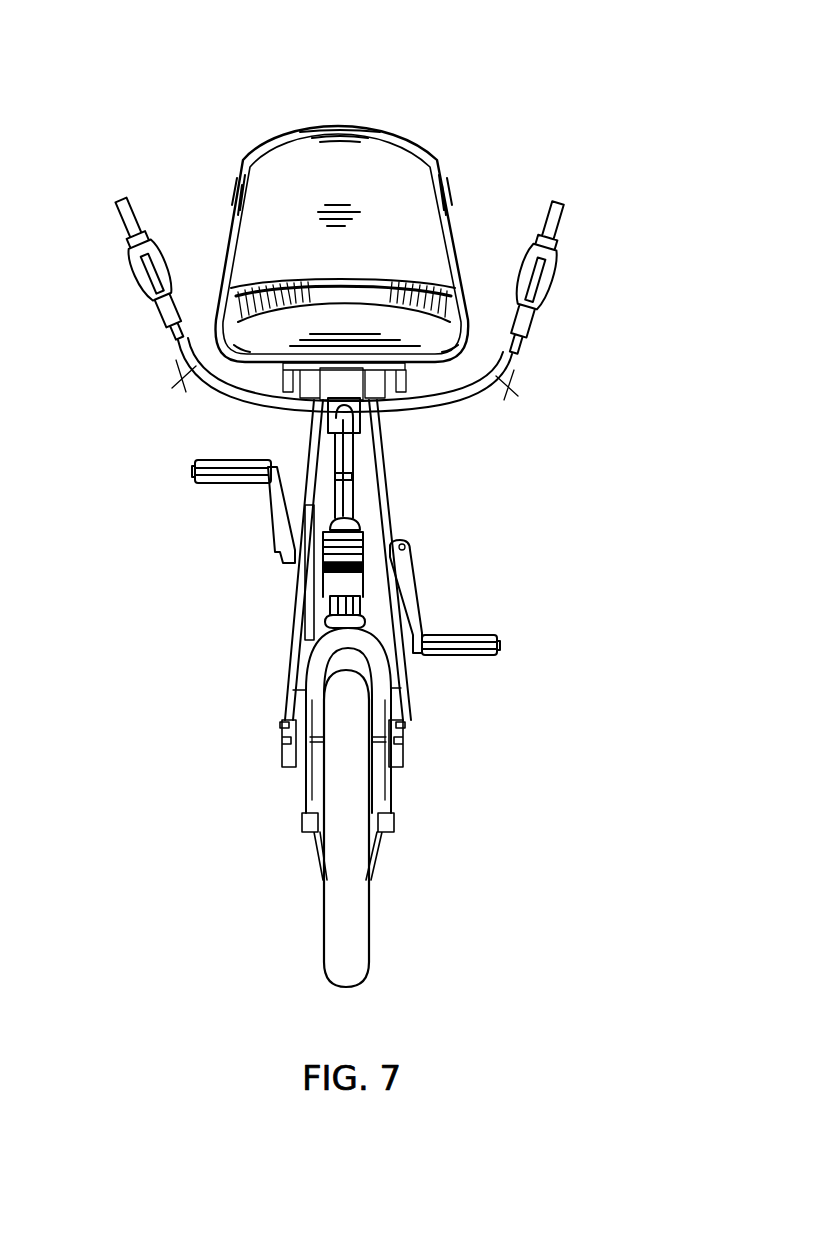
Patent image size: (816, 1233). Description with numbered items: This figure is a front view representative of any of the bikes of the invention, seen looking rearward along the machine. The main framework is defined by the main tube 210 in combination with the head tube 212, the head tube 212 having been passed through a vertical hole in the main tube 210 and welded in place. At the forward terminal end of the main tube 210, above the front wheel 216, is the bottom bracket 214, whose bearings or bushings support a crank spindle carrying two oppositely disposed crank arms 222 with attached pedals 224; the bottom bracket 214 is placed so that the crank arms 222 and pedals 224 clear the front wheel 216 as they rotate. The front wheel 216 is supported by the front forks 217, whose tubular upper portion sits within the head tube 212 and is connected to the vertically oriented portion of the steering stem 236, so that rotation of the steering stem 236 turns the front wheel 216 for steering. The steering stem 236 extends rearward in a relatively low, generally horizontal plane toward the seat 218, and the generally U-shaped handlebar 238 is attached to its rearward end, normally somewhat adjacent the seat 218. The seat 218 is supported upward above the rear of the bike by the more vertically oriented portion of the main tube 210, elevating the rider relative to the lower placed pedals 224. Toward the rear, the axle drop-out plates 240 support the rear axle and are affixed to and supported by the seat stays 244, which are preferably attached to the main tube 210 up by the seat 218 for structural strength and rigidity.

The main tube 210 is at (355, 587).
The head tube 212 is at (330, 605).
The bottom bracket 214 is at (356, 553).
The front wheel 216 is at (369, 938).
The front forks 217 is at (385, 800).
The seat 218 is at (322, 125).
The crank arms 222 is at (276, 521).
The pedals 224 is at (196, 470).
The steering stem 236 is at (342, 457).
The handlebar 238 is at (470, 389).
The axle drop-out plates 240 is at (292, 768).
The seat stays 244 is at (293, 690).